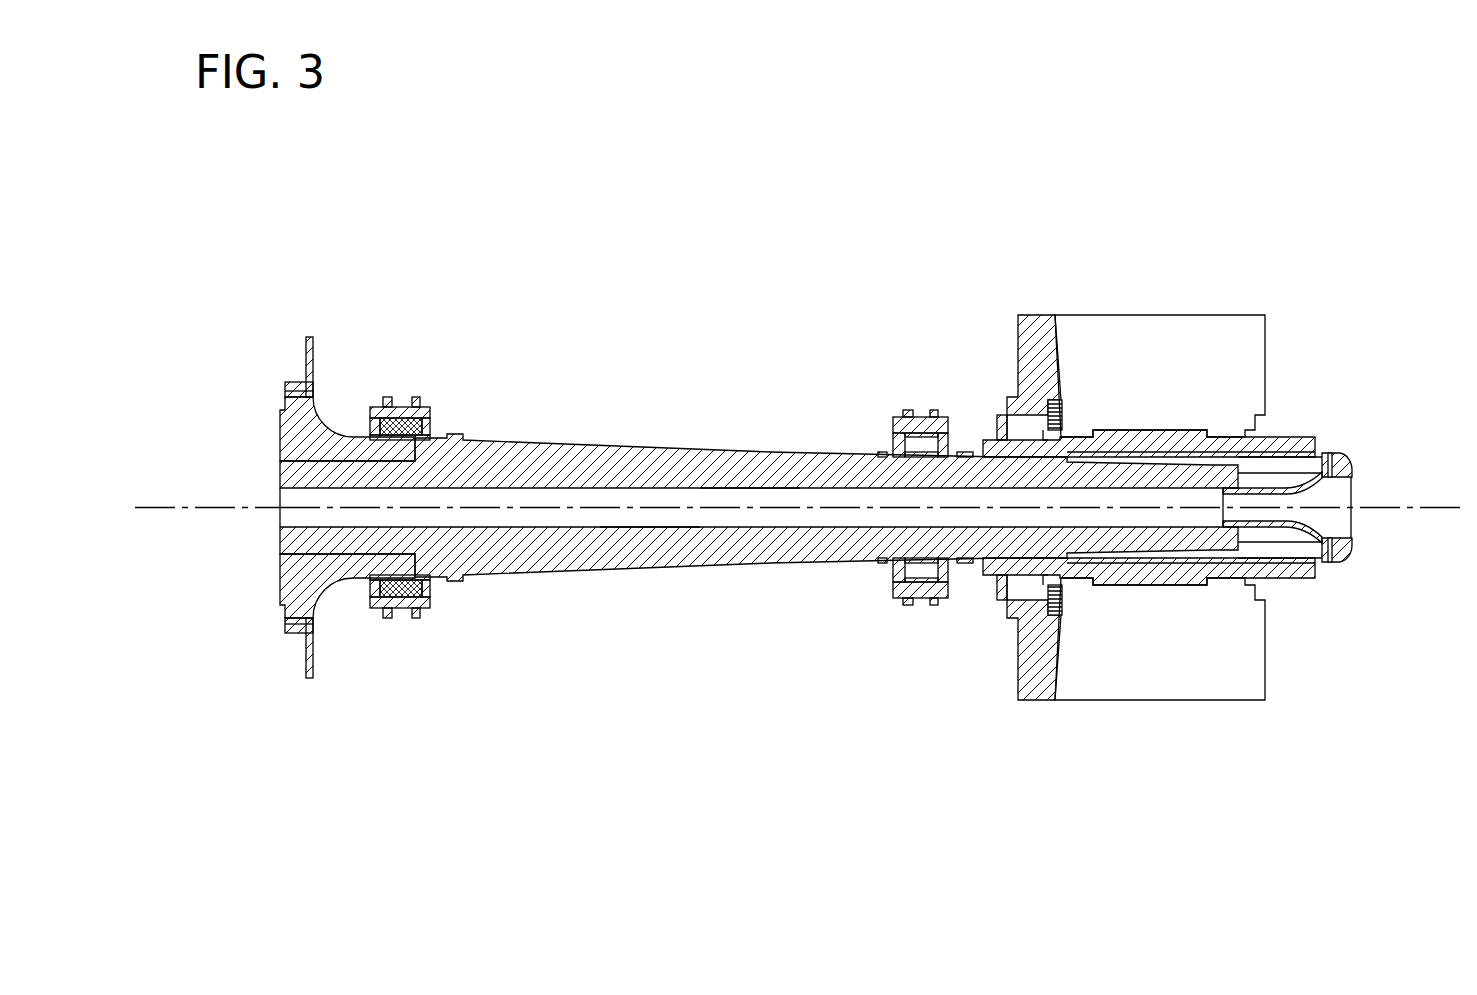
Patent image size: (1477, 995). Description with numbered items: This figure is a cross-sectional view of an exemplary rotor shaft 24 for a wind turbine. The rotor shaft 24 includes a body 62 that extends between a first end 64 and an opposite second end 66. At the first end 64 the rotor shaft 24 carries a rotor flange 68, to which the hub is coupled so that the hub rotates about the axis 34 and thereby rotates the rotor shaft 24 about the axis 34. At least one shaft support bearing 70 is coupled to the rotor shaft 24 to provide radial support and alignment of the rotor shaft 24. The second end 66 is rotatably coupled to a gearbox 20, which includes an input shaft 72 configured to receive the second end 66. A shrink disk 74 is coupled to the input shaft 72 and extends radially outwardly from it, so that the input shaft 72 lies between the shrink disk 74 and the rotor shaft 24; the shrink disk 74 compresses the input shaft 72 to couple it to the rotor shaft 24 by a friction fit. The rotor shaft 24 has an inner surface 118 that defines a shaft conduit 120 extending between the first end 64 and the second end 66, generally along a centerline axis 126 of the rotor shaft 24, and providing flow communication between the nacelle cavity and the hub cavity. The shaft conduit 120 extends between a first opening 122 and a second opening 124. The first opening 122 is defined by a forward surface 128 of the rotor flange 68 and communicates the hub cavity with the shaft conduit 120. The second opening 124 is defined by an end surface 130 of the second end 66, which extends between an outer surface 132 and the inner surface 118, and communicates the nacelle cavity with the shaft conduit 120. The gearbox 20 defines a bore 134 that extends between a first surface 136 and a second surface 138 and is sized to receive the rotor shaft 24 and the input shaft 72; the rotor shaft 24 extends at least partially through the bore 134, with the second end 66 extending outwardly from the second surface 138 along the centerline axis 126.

The gearbox 20 is at (1037, 287).
The rotor shaft 24 is at (816, 441).
The axis 34 is at (1423, 512).
The body 62 is at (668, 450).
The first end 64 is at (659, 430).
The second end 66 is at (1350, 583).
The rotor flange 68 is at (285, 382).
The shaft support bearing 70 is at (435, 378).
The input shaft 72 is at (982, 577).
The shrink disk 74 is at (987, 412).
The inner surface 118 is at (650, 523).
The shaft conduit 120 is at (722, 520).
The first opening 122 is at (254, 523).
The second opening 124 is at (1335, 450).
The centerline axis 126 is at (208, 505).
The forward surface 128 is at (277, 443).
The end surface 130 is at (1350, 470).
The outer surface 132 is at (772, 450).
The bore 134 is at (1306, 626).
The first surface 136 is at (1020, 648).
The second surface 138 is at (1265, 698).